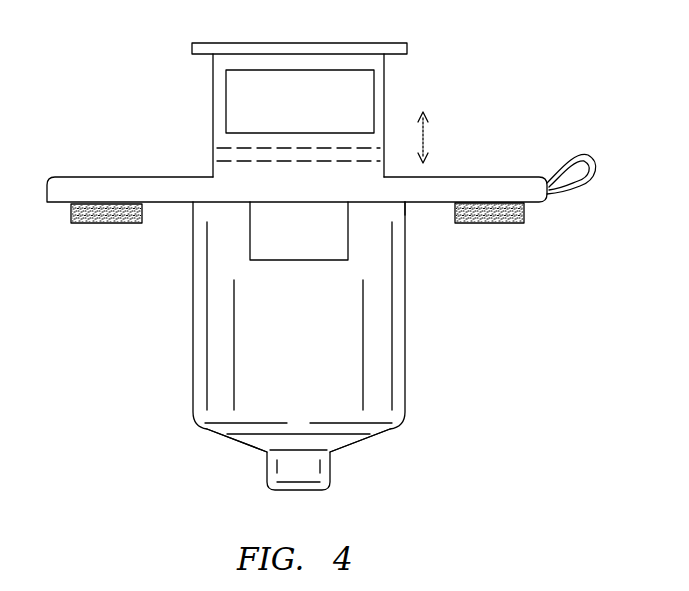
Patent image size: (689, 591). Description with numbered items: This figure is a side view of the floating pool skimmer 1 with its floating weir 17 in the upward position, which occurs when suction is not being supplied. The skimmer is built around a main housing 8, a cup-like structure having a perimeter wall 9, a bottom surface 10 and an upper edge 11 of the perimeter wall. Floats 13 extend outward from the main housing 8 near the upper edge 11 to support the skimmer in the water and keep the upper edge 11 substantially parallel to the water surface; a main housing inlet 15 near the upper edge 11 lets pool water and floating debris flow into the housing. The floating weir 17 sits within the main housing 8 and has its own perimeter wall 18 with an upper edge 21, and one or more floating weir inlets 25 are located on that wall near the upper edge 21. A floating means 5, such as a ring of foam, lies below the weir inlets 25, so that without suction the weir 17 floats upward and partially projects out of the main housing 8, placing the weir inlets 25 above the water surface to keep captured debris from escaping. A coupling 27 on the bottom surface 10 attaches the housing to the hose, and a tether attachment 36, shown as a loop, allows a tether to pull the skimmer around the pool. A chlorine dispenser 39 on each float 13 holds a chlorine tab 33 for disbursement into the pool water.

The floating pool skimmer 1 is at (105, 285).
The floating means 5 is at (250, 148).
The main housing 8 is at (377, 320).
The perimeter wall of main housing 9 is at (405, 352).
The bottom surface of main housing 10 is at (358, 445).
The upper edge of main housing 11 is at (406, 203).
The float 13 is at (100, 177).
The main housing inlet 15 is at (249, 232).
The floating weir 17 is at (213, 83).
The perimeter wall of floating weir 18 is at (385, 82).
The upper edge of floating weir 21 is at (360, 43).
The floating weir inlet 25 is at (258, 102).
The coupling 27 is at (330, 473).
The chlorine tab 33 is at (102, 217).
The tether attachment 36 is at (593, 165).
The chlorine dispenser 39 is at (71, 212).